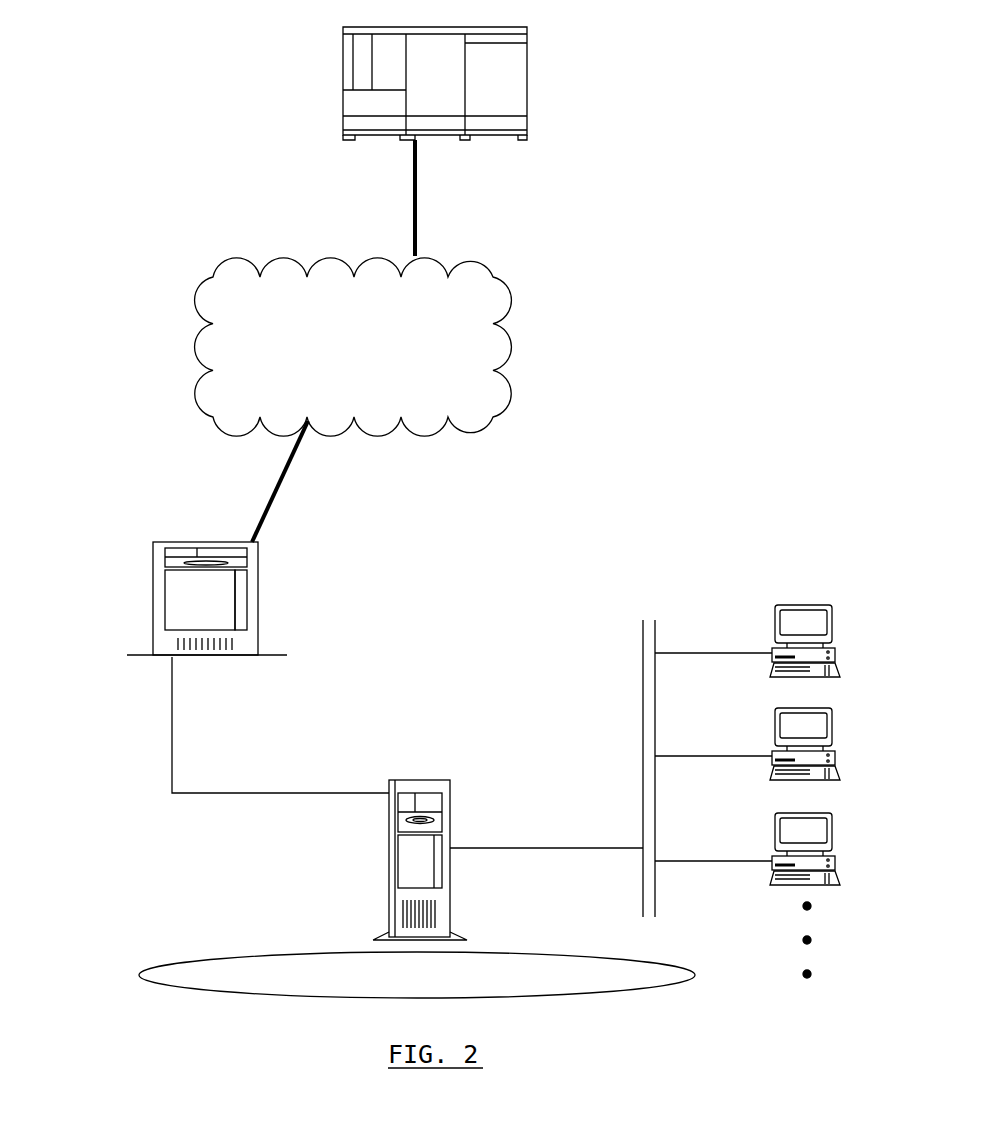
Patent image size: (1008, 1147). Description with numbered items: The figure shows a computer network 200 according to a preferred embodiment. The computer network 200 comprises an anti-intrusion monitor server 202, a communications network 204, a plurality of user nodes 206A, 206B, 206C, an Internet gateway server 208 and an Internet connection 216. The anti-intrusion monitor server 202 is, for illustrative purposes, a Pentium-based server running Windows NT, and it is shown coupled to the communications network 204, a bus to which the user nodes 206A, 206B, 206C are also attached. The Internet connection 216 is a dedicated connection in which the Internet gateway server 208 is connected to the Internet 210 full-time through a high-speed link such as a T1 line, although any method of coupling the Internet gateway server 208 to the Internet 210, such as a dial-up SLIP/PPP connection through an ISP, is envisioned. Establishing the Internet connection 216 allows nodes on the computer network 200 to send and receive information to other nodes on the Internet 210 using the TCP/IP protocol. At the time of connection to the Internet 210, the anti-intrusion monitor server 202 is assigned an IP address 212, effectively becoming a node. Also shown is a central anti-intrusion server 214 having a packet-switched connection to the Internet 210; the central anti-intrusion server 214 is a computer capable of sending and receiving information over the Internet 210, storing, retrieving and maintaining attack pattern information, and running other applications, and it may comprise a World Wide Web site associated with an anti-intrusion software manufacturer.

The computer network 200 is at (340, 494).
The anti-intrusion monitor server 202 is at (420, 845).
The communications network 204 is at (675, 768).
The user node 206A is at (828, 641).
The user node 206B is at (828, 744).
The user node 206C is at (828, 849).
The Internet gateway server 208 is at (221, 598).
The Internet 210 is at (387, 347).
The IP address 212 is at (417, 985).
The central anti-intrusion server 214 is at (460, 83).
The Internet connection 216 is at (289, 481).